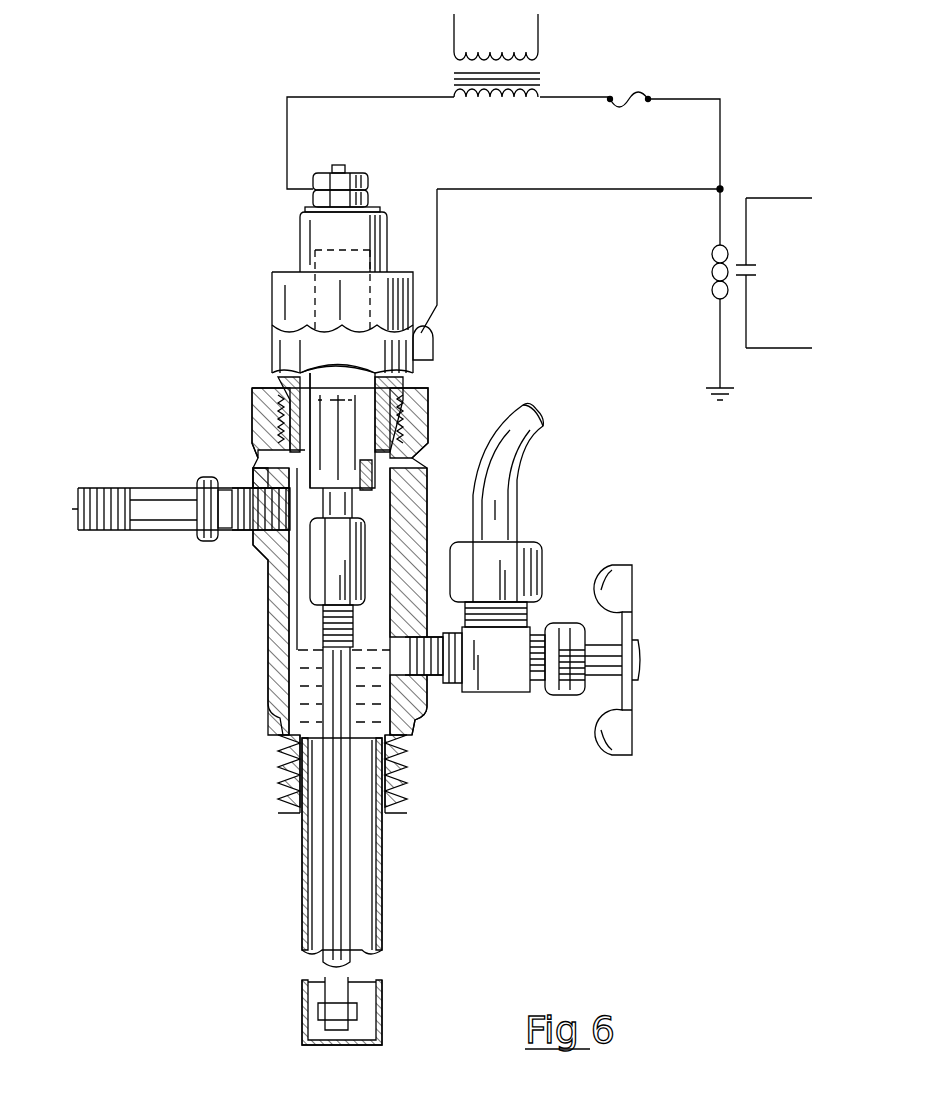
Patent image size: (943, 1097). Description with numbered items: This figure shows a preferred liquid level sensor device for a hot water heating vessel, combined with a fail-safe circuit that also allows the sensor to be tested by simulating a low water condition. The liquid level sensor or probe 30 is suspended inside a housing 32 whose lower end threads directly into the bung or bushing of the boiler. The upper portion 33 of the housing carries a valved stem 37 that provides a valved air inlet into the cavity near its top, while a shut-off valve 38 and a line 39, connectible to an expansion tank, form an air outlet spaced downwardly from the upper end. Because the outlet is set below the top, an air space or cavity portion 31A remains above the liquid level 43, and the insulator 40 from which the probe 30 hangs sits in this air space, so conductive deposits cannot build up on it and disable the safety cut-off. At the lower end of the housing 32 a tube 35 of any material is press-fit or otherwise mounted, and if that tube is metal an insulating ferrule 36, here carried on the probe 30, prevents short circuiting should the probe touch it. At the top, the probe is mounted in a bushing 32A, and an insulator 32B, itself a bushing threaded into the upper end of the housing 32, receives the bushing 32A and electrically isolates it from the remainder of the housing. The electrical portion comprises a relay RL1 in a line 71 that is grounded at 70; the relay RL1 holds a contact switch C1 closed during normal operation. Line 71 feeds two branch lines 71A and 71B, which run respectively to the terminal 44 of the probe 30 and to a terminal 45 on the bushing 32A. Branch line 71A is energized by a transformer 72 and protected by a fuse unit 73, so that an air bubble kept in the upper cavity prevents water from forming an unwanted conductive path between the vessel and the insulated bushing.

The liquid level sensor 30 is at (330, 847).
The cavity portion 31A is at (375, 522).
The housing 32 is at (266, 686).
The bushing 32A is at (272, 346).
The insulator 32B is at (412, 410).
The upper portion 33 is at (275, 616).
The tube 35 is at (300, 880).
The ferrule 36 is at (320, 1012).
The valved stem 37 is at (169, 488).
The shut-off valve 38 is at (494, 680).
The line 39 is at (507, 508).
The insulator 40 is at (320, 426).
The liquid level 43 is at (306, 646).
The electrode lead 44 is at (369, 182).
The terminal 45 is at (433, 346).
The ground 70 is at (706, 393).
The line 71 is at (720, 214).
The branch line 71A is at (720, 140).
The branch line 71B is at (655, 191).
The transformer 72 is at (543, 47).
The fuse unit 73 is at (655, 96).
The relay RL1 is at (682, 272).
The contact switch C1 is at (774, 273).